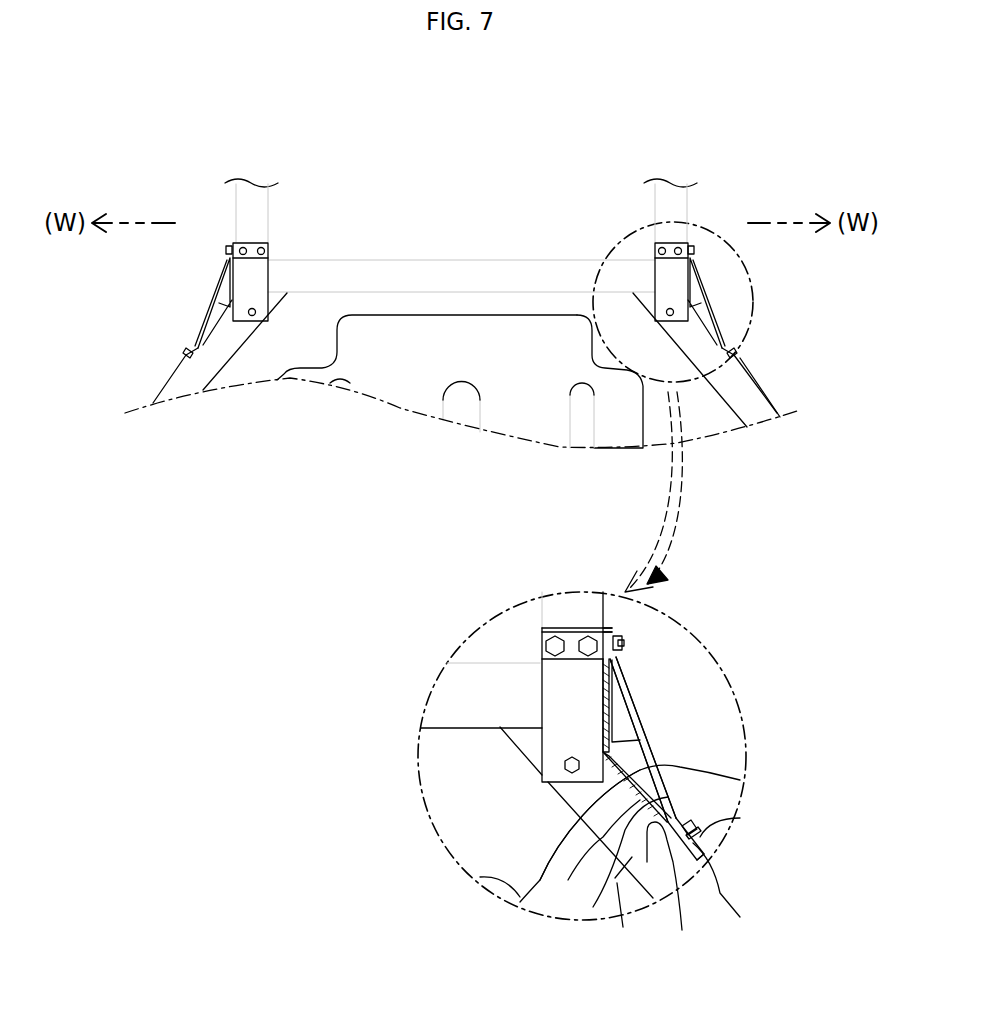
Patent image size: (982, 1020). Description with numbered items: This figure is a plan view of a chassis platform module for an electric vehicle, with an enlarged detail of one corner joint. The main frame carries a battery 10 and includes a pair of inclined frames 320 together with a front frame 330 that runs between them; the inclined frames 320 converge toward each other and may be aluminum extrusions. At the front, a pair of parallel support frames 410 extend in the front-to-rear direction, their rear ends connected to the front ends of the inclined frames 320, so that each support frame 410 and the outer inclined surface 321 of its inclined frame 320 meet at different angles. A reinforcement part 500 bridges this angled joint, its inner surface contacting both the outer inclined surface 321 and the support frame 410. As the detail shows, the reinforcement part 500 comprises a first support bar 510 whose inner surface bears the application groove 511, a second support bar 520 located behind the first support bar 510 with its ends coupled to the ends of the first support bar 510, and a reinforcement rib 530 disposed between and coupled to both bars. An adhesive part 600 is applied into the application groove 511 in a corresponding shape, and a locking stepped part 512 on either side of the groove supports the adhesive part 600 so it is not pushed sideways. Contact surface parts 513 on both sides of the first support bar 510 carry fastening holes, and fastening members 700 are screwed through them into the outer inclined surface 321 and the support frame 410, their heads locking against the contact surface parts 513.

The battery 10 is at (405, 378).
The inclined frame 320 is at (740, 380).
The outer inclined surface 321 is at (770, 402).
The front frame 330 is at (425, 268).
The support frame 410 is at (665, 192).
The reinforcement part 500 is at (700, 280).
The first support bar 510 is at (642, 790).
The application groove 511 is at (593, 907).
The locking stepped part 512 is at (586, 672).
The contact surface part 513 is at (612, 630).
The second support bar 520 is at (655, 755).
The reinforcement rib 530 is at (610, 702).
The adhesive part 600 is at (520, 902).
The fastening member 700 is at (625, 642).